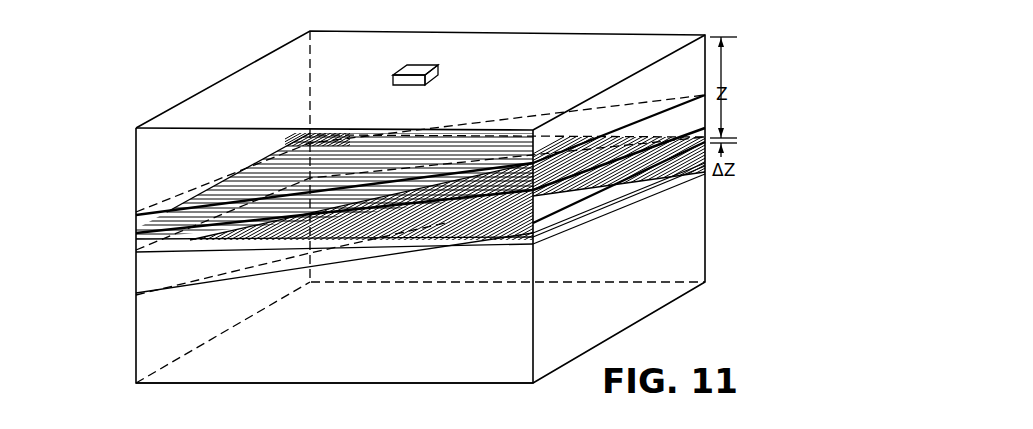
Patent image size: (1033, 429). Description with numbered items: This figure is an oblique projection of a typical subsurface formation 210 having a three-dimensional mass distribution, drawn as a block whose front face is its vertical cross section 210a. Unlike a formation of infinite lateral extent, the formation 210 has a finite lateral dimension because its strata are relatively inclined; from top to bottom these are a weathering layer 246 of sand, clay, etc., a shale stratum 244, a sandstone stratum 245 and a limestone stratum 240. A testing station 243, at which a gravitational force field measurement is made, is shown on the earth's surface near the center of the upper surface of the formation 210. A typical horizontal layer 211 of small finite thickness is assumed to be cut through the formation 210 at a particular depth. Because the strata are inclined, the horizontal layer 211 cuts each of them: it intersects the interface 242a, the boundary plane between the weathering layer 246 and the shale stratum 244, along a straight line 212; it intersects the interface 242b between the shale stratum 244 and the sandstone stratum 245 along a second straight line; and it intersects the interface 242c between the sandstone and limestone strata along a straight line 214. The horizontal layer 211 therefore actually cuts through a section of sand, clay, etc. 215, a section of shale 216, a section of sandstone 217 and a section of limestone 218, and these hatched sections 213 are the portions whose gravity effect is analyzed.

The subsurface formation 210 is at (130, 383).
The vertical cross section 210a is at (135, 294).
The horizontal layer 211 is at (135, 240).
The straight line of intersection with interface 242a 212 is at (342, 136).
The horizontally hatched front section of slab 213 is at (362, 207).
The straight line of intersection with interface 242c 214 is at (466, 233).
The section of sand, clay, etc. 215 is at (303, 130).
The section of shale 216 is at (268, 176).
The section of sandstone 217 is at (588, 192).
The section of limestone 218 is at (540, 226).
The limestone stratum 240 is at (130, 345).
The interface 242a is at (183, 208).
The interface 242b is at (203, 271).
The interface 242c is at (243, 301).
The testing station 243 is at (439, 70).
The shale stratum 244 is at (135, 232).
The sandstone stratum 245 is at (135, 287).
The weathering layer 246 is at (131, 171).